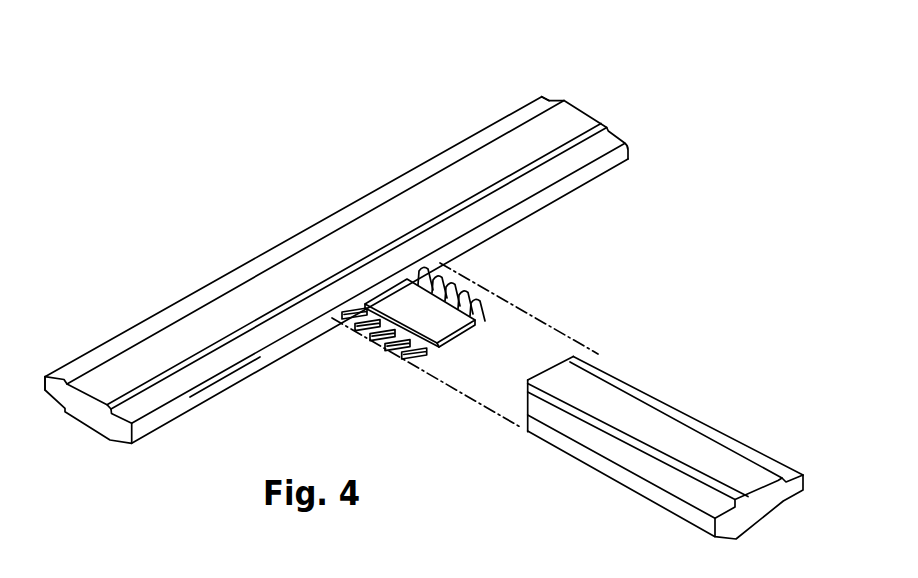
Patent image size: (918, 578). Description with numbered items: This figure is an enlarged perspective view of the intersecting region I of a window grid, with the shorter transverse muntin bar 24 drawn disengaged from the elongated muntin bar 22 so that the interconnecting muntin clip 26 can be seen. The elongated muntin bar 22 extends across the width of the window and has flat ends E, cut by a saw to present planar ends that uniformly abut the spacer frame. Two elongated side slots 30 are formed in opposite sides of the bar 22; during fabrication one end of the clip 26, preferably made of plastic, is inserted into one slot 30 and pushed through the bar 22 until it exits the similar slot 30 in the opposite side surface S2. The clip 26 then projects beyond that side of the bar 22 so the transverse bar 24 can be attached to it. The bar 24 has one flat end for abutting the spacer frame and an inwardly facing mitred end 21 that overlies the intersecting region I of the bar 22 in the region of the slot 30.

The mitred end 21 is at (665, 427).
The elongated muntin bar 22 is at (502, 165).
The transverse muntin bar 24 is at (604, 402).
The muntin clip 26 is at (387, 299).
The elongated side slot 30 is at (396, 290).
The side surface S2 is at (231, 380).
The intersecting region I is at (492, 267).
The flat ends E is at (636, 104).